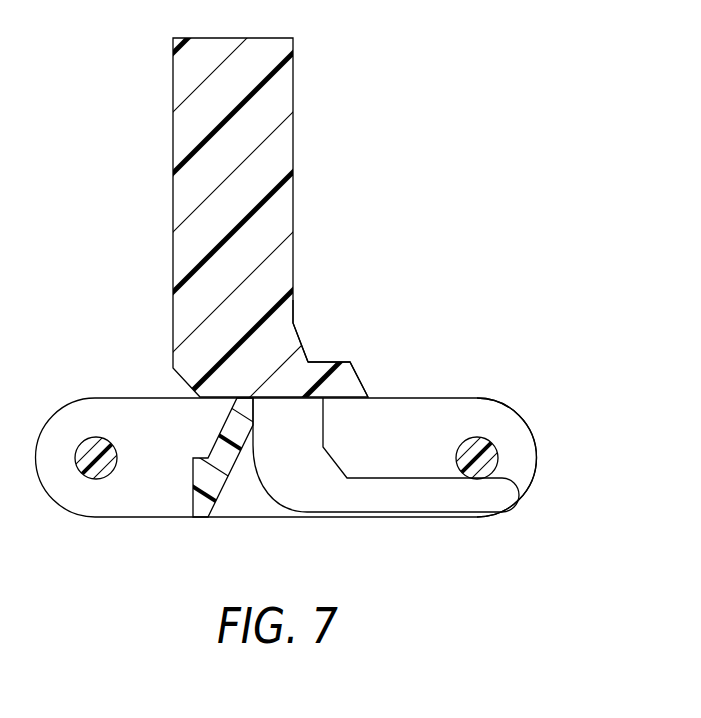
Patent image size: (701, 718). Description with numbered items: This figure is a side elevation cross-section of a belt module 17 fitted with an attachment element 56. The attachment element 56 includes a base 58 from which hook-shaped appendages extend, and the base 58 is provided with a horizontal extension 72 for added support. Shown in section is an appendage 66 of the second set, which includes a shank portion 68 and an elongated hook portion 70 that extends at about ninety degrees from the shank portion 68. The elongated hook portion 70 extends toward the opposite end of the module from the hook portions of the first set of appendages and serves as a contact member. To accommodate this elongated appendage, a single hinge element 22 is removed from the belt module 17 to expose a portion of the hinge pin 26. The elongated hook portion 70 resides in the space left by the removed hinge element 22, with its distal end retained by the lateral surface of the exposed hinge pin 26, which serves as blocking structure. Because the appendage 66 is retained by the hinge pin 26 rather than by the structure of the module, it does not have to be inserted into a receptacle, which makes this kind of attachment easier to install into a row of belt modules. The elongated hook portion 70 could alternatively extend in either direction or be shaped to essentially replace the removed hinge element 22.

The belt module 17 is at (128, 505).
The hinge element 22 is at (477, 405).
The hinge pin 26 is at (492, 455).
The attachment element 56 is at (280, 103).
The base 58 is at (278, 335).
The horizontal extension 72 is at (353, 365).
The appendage 66 is at (417, 503).
The shank portion 68 is at (268, 468).
The elongated hook portion 70 is at (498, 497).